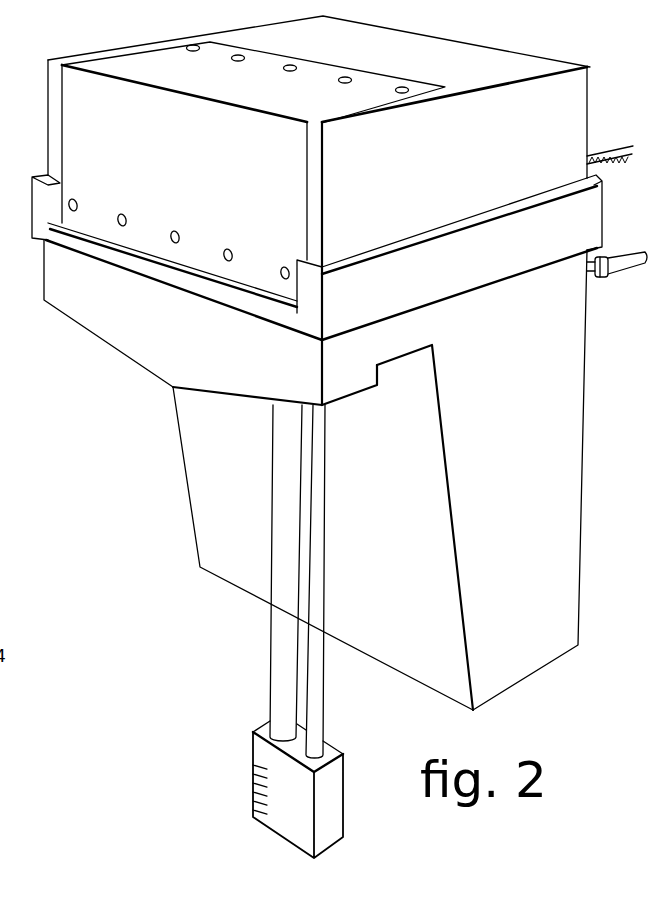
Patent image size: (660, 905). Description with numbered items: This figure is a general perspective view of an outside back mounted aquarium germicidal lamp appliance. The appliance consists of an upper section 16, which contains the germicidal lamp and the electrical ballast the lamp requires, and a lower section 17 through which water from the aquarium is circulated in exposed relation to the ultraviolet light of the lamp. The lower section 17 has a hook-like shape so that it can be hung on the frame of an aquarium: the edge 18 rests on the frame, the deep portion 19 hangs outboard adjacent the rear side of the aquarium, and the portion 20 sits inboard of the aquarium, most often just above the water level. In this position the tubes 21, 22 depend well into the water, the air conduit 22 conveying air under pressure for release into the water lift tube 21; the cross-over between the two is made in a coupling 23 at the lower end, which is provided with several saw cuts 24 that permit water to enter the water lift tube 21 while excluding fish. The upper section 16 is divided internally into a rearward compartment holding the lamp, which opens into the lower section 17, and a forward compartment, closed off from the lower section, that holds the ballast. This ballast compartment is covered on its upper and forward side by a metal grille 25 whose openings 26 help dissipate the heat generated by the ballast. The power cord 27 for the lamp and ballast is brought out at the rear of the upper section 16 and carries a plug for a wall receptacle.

The upper section 16 is at (597, 110).
The lower section 17 is at (593, 425).
The edge 18 is at (400, 358).
The deep portion 19 is at (558, 553).
The portion 20 is at (345, 385).
The water lift tube 21 is at (280, 662).
The air conduit 22 is at (318, 688).
The base block 23 is at (334, 798).
The saw cuts 24 is at (253, 783).
The metal grille 25 is at (117, 64).
The openings 26 is at (286, 73).
The power cord 27 is at (613, 158).